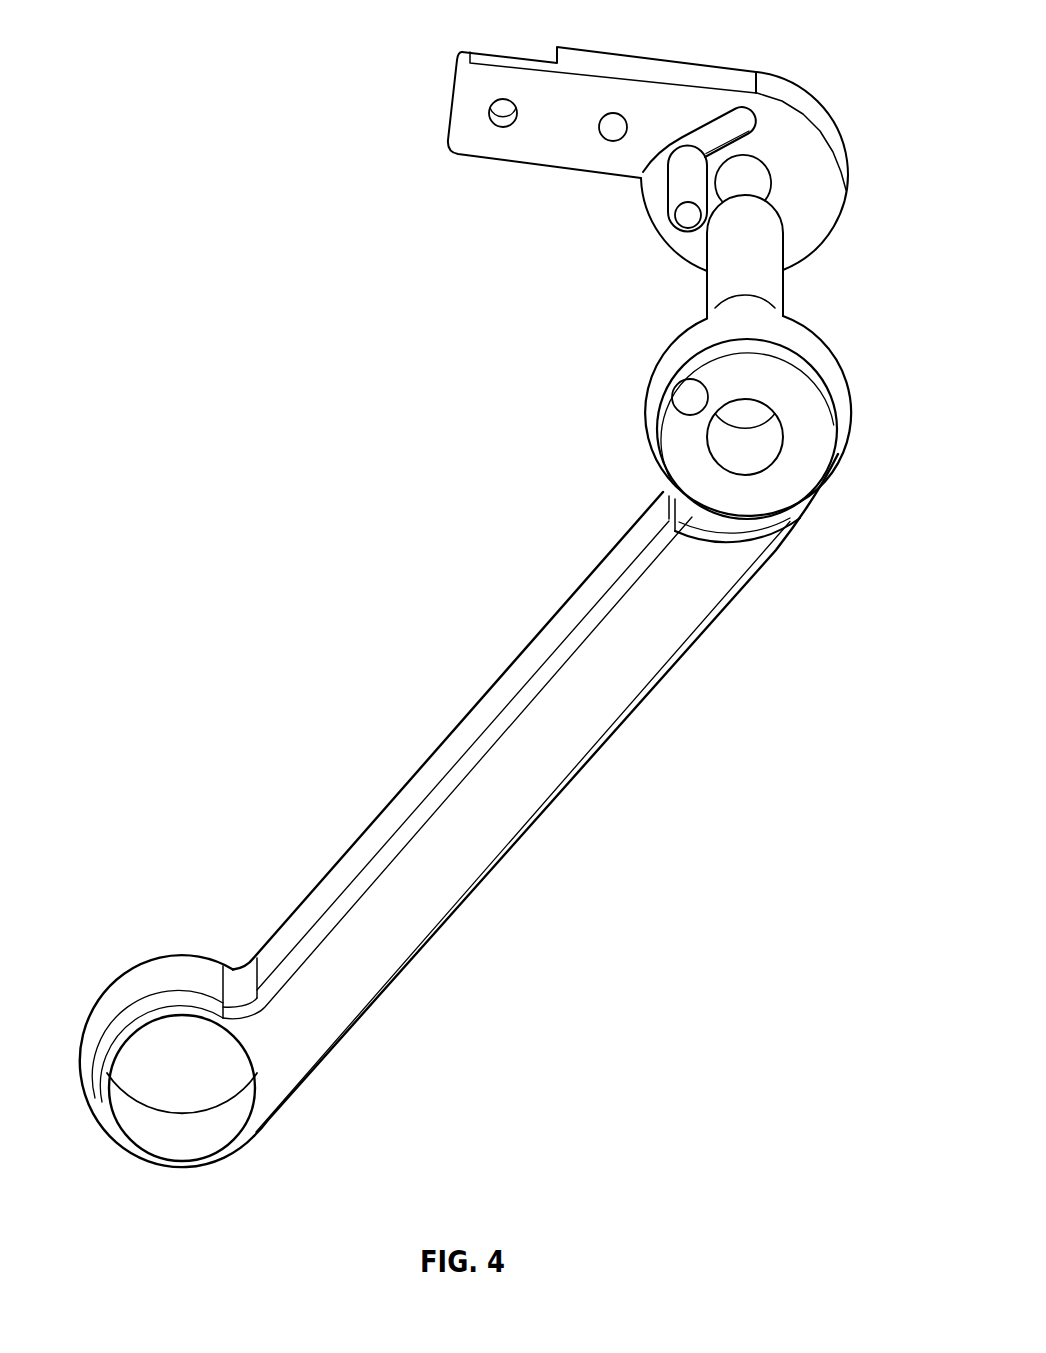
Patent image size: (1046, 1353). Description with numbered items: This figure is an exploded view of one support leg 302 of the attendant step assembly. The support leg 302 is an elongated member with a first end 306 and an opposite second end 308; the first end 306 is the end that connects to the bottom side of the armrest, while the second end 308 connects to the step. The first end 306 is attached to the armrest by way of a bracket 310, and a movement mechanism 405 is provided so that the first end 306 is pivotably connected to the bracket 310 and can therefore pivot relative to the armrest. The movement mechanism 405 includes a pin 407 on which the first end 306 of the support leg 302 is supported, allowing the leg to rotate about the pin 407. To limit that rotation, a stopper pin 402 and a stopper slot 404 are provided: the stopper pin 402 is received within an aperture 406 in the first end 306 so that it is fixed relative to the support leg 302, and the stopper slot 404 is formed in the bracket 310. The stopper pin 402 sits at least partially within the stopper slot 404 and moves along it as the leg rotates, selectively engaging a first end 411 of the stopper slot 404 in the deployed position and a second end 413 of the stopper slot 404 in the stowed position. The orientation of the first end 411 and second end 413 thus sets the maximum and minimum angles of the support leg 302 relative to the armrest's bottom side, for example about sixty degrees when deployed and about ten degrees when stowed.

The support leg 302 is at (523, 793).
The first end 306 is at (818, 464).
The second end 308 is at (240, 1147).
The bracket 310 is at (460, 82).
The stopper pin 402 is at (667, 193).
The stopper slot 404 is at (720, 127).
The movement mechanism 405 is at (812, 292).
The aperture 406 is at (689, 397).
The pin 407 is at (767, 236).
The first end of the stopper slot 411 is at (680, 141).
The second end of the stopper slot 413 is at (846, 188).